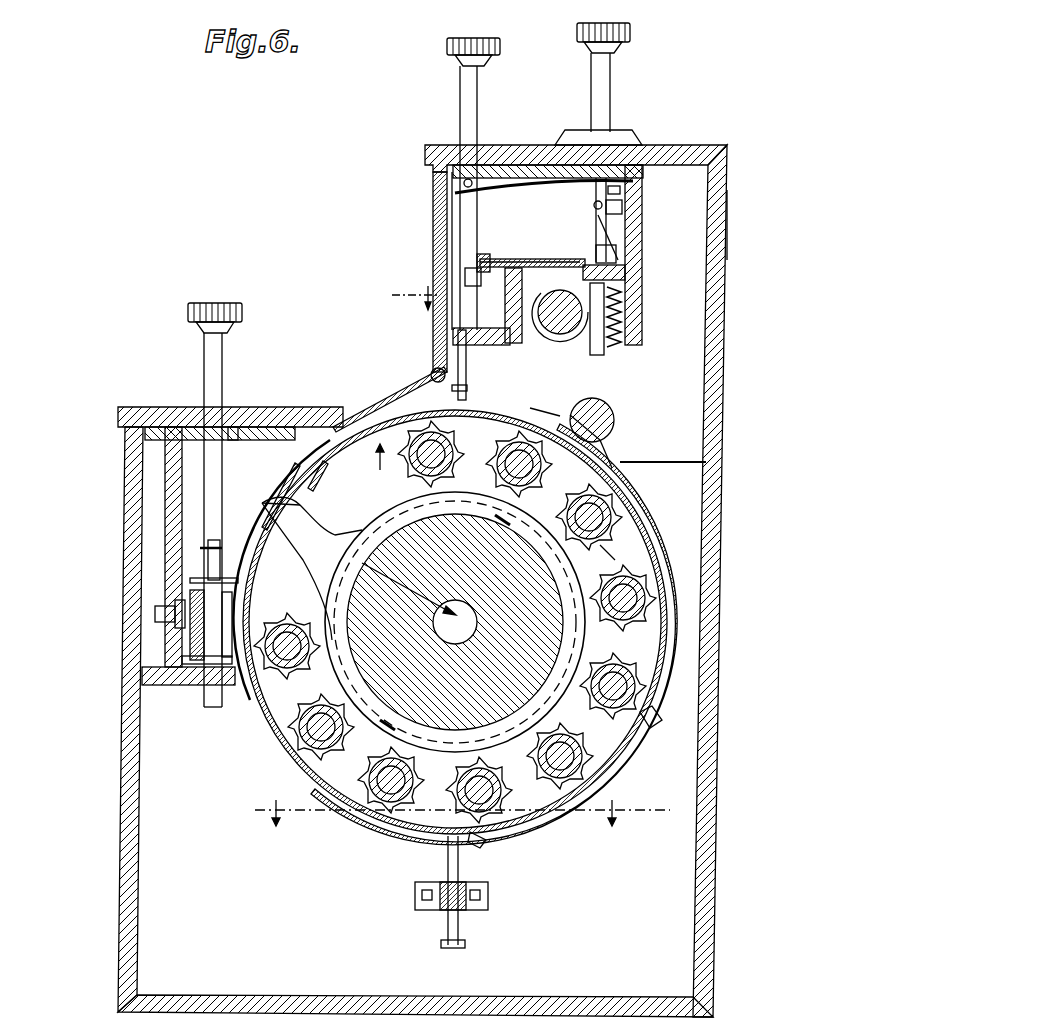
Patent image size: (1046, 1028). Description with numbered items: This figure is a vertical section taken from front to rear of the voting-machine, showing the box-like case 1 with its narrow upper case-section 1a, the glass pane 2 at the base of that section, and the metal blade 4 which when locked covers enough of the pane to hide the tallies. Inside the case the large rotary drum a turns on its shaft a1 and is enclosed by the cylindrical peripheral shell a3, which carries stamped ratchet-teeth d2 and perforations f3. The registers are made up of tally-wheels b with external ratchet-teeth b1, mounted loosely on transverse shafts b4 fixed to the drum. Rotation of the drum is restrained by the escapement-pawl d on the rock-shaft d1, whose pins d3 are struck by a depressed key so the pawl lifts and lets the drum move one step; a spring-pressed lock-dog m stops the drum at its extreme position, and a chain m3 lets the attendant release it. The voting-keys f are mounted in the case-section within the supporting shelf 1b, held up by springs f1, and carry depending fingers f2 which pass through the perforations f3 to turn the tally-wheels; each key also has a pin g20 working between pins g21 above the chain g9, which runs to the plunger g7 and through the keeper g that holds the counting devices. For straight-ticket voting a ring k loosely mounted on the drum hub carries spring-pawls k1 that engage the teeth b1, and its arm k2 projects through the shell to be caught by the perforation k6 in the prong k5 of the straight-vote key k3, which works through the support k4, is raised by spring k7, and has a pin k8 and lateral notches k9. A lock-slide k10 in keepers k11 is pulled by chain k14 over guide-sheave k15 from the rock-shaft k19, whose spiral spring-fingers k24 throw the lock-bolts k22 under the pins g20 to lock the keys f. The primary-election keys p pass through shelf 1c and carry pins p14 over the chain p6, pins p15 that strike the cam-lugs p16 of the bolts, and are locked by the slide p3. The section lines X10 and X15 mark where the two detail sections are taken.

The box-like case 1 is at (720, 630).
The transversely-extended case-section 1a is at (727, 232).
The supporting bracket or shelf 1b is at (508, 262).
The shelf 1c is at (640, 290).
The glass pane 2 is at (369, 406).
The metal blade 4 is at (420, 384).
The vertically-movable key f is at (470, 125).
The spring f1 is at (458, 207).
The depending finger f2 is at (467, 356).
The perforation f3 is at (496, 406).
The primary-election key p is at (600, 92).
The locking blade or slide p3 is at (626, 264).
The chain p6 is at (622, 212).
The pin p14 is at (614, 200).
The cam-actuating pin p15 is at (587, 227).
The cam-lug p16 is at (640, 238).
The keeper g is at (545, 396).
The plunger or slide g7 is at (453, 330).
The chain g9 is at (478, 262).
The projecting pin or lug g20 is at (484, 256).
The pin g21 is at (493, 305).
The ring or collar k is at (338, 536).
The spring-pawl k1 is at (447, 607).
The projecting arm k2 is at (298, 514).
The straight-vote key k3 is at (200, 382).
The support k4 is at (166, 526).
The prong k5 is at (262, 502).
The perforation k6 is at (308, 480).
The spring k7 is at (206, 545).
The forwardly-projecting pin k8 is at (188, 581).
The lateral notch k9 is at (231, 624).
The lock slide or plate k10 is at (190, 686).
The keeper k11 is at (170, 686).
The chain k14 is at (188, 650).
The guide-sheave k15 is at (154, 614).
The rock-shaft k19 is at (586, 318).
The lock-bolt k22 is at (562, 258).
The spiral spring-finger k24 is at (556, 342).
The rotary drum a is at (358, 602).
The drum shaft a1 is at (397, 573).
The cylindrical peripheral shell a3 is at (270, 748).
The tally-wheel b is at (545, 466).
The external ratchet-tooth b1 is at (608, 534).
The transverse shaft b4 is at (461, 599).
The escapement-pawl d is at (632, 468).
The rock-shaft d1 is at (612, 430).
The ratchet-tooth d2 is at (400, 836).
The projecting pin or rod d3 is at (585, 406).
The lock-dog m is at (446, 862).
The chain m3 is at (466, 946).
The section line X10 is at (402, 291).
The section line X15 is at (451, 805).